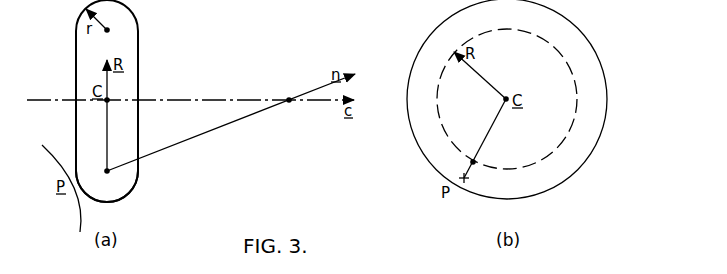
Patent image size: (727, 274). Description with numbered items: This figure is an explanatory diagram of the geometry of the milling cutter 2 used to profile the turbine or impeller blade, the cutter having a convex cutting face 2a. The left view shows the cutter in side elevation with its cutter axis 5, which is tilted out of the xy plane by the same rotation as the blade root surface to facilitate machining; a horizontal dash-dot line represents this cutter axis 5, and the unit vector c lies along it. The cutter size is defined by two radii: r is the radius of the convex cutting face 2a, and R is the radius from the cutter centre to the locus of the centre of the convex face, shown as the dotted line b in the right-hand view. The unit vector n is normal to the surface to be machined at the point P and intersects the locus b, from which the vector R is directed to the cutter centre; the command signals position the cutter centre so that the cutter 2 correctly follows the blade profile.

The milling cutter 2 is at (128, 134).
The convex cutting face 2a is at (131, 192).
The cutter axis 5 is at (225, 98).
The locus of the centre of the convex face b is at (465, 34).